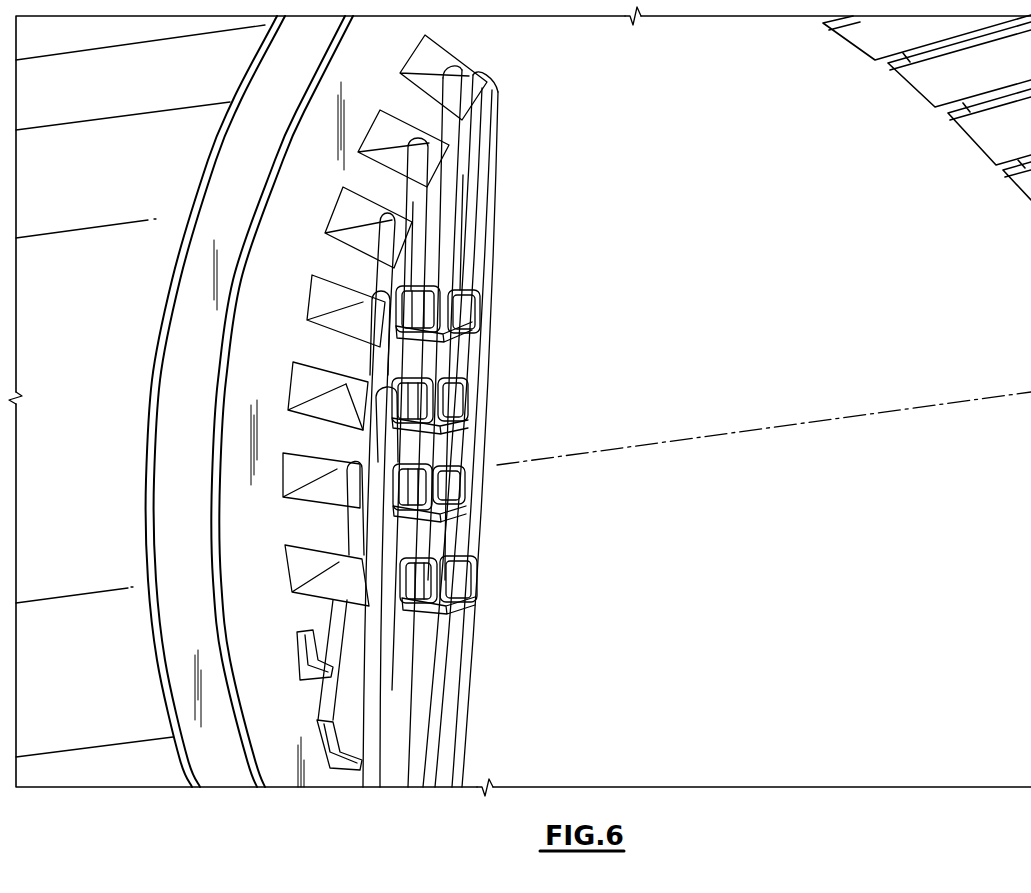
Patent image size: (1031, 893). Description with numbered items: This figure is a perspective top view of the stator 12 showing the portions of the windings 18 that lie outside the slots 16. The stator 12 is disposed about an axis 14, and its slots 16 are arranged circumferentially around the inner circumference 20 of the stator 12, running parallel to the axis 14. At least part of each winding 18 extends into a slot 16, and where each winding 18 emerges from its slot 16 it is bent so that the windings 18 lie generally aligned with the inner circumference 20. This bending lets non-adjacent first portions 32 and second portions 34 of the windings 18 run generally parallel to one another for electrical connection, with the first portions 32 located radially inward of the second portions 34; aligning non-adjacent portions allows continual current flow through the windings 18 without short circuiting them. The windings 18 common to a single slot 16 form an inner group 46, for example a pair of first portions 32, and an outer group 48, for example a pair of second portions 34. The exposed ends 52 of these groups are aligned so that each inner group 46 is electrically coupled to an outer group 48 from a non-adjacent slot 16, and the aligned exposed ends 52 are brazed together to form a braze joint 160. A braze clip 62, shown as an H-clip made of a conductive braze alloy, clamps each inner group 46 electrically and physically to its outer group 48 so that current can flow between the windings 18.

The stator 12 is at (592, 392).
The axis 14 is at (927, 410).
The slots 16 is at (393, 135).
The windings 18 is at (458, 255).
The inner circumference 20 is at (500, 73).
The first portions 32 is at (385, 290).
The second portions 34 is at (395, 397).
The inner group 46 is at (455, 400).
The outer group 48 is at (430, 432).
The exposed ends 52 is at (420, 333).
The braze clip 62 is at (475, 283).
The braze joint 160 is at (480, 572).